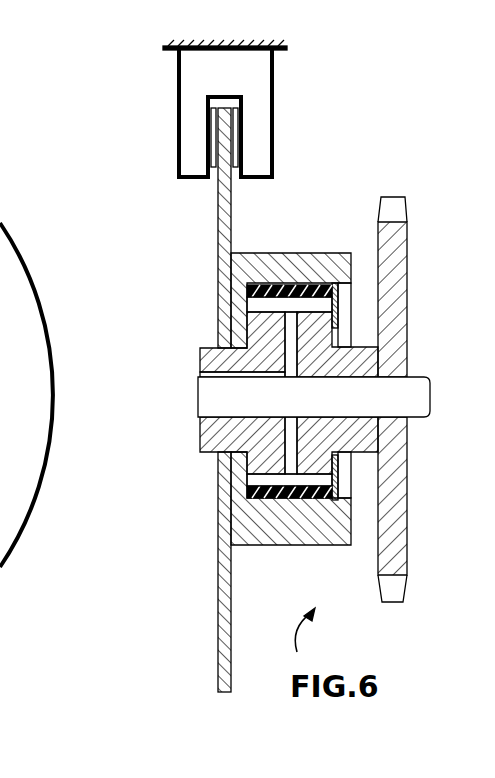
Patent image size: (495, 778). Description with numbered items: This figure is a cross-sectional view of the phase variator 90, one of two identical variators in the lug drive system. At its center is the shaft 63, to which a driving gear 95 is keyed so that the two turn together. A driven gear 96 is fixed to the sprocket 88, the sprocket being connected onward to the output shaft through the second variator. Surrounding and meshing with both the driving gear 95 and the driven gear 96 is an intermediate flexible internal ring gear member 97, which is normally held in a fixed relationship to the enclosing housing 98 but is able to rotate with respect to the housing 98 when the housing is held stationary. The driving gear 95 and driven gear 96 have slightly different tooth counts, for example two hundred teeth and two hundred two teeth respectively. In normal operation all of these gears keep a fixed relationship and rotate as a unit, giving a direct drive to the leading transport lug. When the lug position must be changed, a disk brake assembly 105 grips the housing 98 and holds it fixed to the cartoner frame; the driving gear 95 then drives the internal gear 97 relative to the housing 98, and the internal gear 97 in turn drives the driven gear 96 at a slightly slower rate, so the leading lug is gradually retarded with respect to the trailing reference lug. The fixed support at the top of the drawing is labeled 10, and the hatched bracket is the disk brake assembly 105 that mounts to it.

The fixed support 10 is at (289, 46).
The disk brake assembly 105 is at (266, 138).
The housing 98 is at (293, 265).
The intermediate flexible internal ring gear member 97 is at (294, 498).
The driven gear 96 is at (317, 347).
The driving gear 95 is at (200, 440).
The sprocket 88 is at (405, 195).
The shaft 63 is at (436, 411).
The phase variator 90 is at (312, 633).